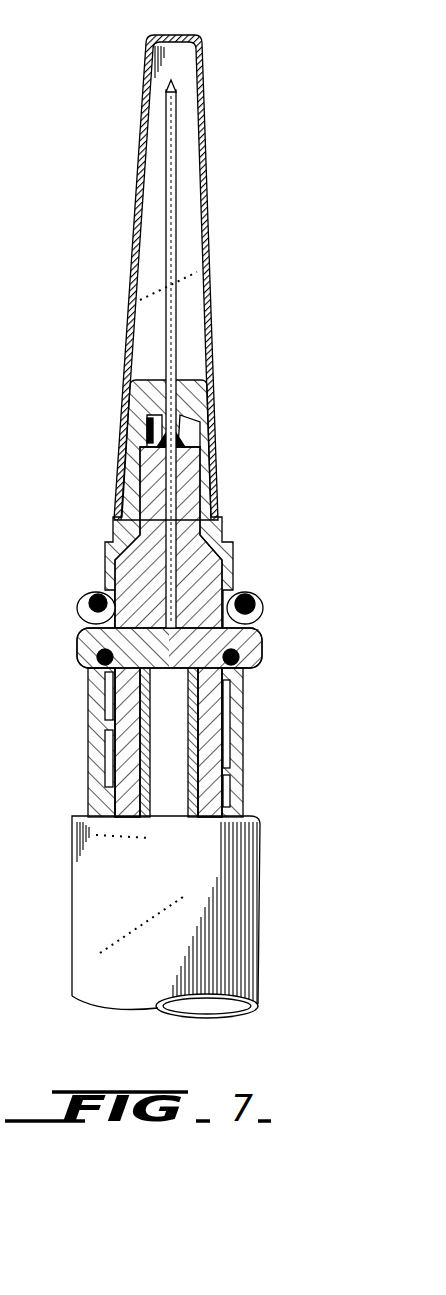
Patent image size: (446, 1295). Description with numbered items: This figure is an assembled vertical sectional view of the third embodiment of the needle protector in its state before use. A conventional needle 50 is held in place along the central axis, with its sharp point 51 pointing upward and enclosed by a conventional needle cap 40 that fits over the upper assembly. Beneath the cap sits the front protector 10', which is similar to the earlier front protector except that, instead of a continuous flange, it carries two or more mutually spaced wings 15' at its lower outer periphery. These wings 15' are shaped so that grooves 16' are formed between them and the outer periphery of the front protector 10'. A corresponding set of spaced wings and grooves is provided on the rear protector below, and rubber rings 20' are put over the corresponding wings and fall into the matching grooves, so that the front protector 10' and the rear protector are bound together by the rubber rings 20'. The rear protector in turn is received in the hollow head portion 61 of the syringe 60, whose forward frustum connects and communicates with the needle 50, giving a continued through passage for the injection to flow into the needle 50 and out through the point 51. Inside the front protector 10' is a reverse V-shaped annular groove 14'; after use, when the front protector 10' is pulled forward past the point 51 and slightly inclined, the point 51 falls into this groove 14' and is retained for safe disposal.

The front protector 10' is at (206, 598).
The reverse V-shaped annular groove 14' is at (102, 437).
The wings 15' is at (273, 619).
The grooves 16' is at (198, 600).
The rubber rings 20' is at (162, 631).
The needle cap 40 is at (213, 222).
The needle 50 is at (177, 325).
The point 51 is at (171, 84).
The syringe 60 is at (262, 877).
The head portion 61 is at (243, 752).